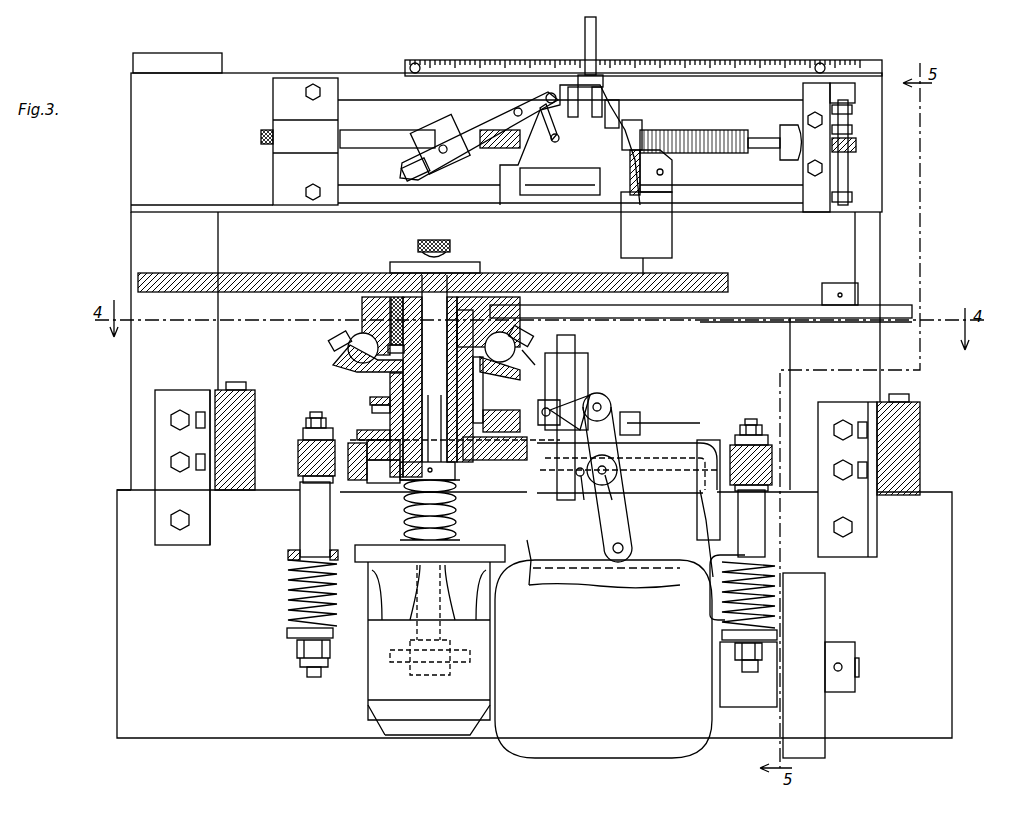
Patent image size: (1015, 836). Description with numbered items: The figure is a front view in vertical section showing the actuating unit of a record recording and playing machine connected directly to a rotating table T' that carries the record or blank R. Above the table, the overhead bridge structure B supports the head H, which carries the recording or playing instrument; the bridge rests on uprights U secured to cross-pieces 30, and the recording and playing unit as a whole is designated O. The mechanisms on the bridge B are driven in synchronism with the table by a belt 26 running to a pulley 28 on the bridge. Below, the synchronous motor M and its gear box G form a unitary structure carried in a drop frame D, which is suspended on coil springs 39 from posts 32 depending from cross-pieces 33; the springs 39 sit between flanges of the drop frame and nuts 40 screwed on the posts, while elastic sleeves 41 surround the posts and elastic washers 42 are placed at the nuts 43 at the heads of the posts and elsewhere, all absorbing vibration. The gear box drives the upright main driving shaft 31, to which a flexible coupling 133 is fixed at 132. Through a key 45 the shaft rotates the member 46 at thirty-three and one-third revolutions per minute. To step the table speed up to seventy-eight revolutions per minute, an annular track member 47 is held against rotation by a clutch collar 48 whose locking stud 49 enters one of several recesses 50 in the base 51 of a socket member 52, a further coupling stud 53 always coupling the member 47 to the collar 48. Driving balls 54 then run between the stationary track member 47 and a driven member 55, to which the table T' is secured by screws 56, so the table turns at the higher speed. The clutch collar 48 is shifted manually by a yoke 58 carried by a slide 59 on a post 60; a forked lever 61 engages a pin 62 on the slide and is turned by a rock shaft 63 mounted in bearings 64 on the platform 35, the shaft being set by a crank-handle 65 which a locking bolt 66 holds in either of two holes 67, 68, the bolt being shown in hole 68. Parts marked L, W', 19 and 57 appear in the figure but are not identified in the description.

The bridge B is at (259, 60).
The recording and/or playing unit O is at (116, 176).
The uprights U is at (137, 232).
The rotating table T' is at (433, 267).
The record or blank R is at (605, 275).
The head H is at (663, 222).
The lead screw L is at (719, 160).
The drop frame D is at (868, 152).
The gear box G is at (372, 684).
The motor M is at (580, 748).
The work holder W' is at (825, 665).
The bracket 19 is at (730, 560).
The belt 26 is at (640, 318).
The pulley 28 is at (772, 305).
The cross-pieces 30 is at (537, 475).
The main driving shaft 31 is at (442, 466).
The posts 32 is at (315, 412).
The cross-pieces 33 is at (716, 440).
The platform 35 is at (664, 445).
The coil springs 39 is at (290, 588).
The nuts 40 is at (328, 655).
The sleeves 41 is at (310, 512).
The washers 42 is at (303, 434).
The nuts 43 is at (306, 422).
The key 45 is at (442, 372).
The driving member 46 is at (355, 336).
The annular track member 47 is at (335, 362).
The clutch collar 48 is at (372, 403).
The locking stud 49 is at (372, 410).
The recess 50 is at (437, 460).
The base 51 is at (362, 432).
The socket member 52 is at (447, 408).
The coupling stud 53 is at (483, 390).
The driving balls 54 is at (342, 345).
The driven member 55 is at (362, 322).
The screws 56 is at (385, 276).
The wedge 57 is at (525, 352).
The yoke 58 is at (500, 425).
The slide 59 is at (588, 365).
The post 60 is at (575, 343).
The forked lever 61 is at (572, 398).
The pin 62 is at (548, 408).
The rock shaft 63 is at (602, 405).
The bearings 64 is at (628, 430).
The crank-handle 65 is at (628, 536).
The locking bolt 66 is at (615, 498).
The hole 67 is at (583, 495).
The hole 68 is at (615, 478).
The fixing point 132 is at (404, 488).
The flexible coupling 133 is at (404, 512).